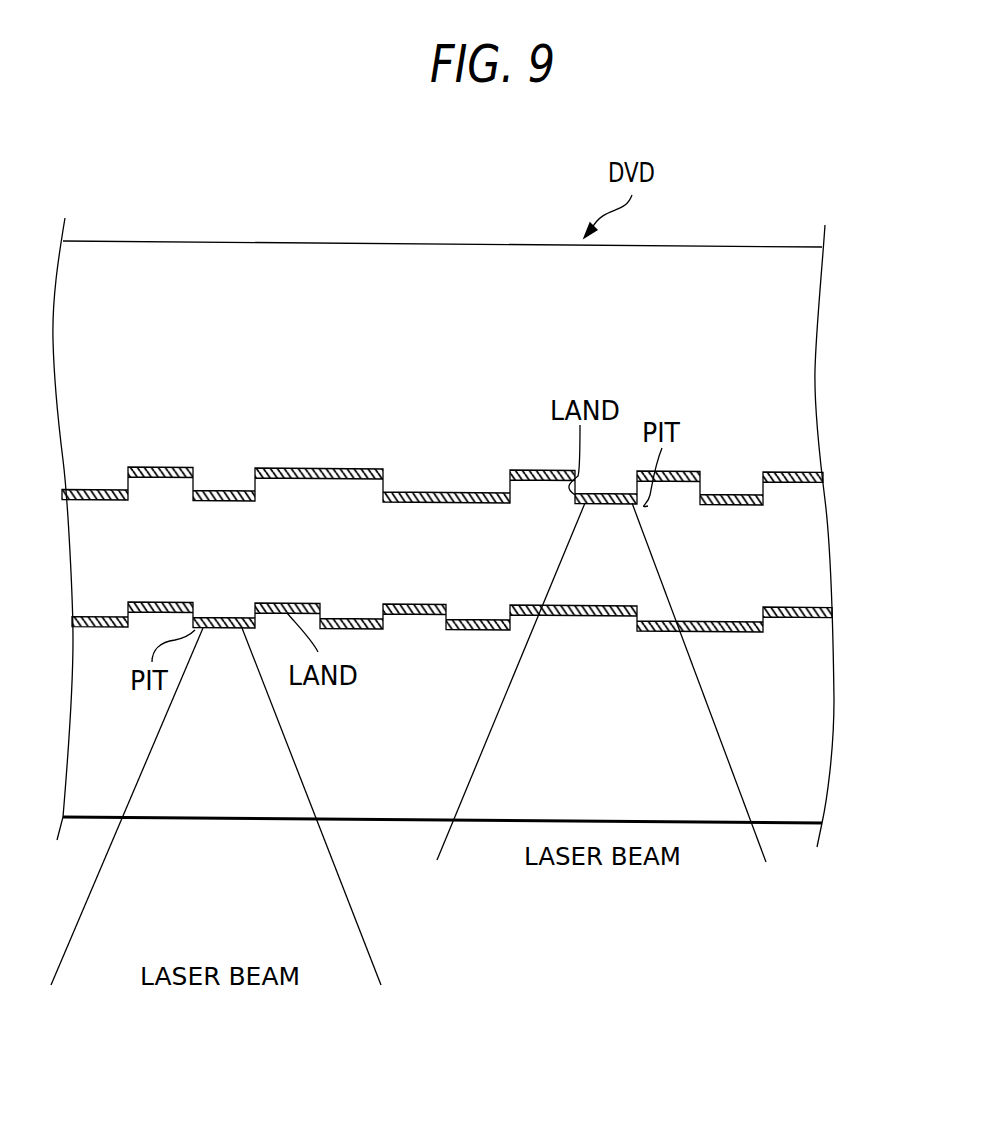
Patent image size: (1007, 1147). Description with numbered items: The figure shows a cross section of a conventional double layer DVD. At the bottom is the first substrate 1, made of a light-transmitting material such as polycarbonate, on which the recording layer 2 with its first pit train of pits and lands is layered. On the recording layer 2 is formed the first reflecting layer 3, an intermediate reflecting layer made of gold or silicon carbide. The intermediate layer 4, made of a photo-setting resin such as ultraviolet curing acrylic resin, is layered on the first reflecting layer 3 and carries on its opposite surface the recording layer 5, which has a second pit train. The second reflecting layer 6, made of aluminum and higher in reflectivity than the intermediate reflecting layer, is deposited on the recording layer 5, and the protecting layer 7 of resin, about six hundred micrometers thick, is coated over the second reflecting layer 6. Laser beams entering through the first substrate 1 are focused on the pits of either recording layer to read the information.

The first substrate 1 is at (817, 757).
The recording layer 2 is at (803, 618).
The first reflecting layer 3 is at (491, 672).
The intermediate layer 4 is at (815, 553).
The recording layer 5 is at (812, 483).
The second reflecting layer 6 is at (463, 467).
The protecting layer 7 is at (800, 328).